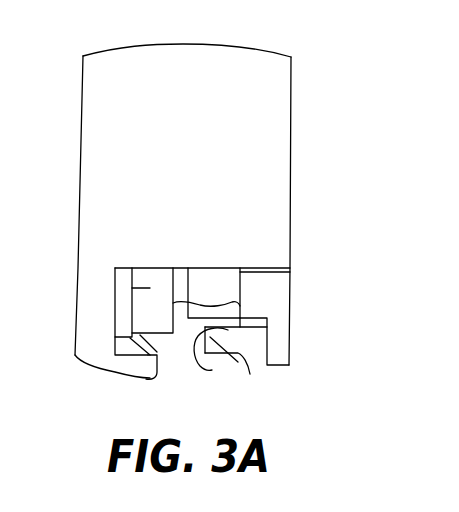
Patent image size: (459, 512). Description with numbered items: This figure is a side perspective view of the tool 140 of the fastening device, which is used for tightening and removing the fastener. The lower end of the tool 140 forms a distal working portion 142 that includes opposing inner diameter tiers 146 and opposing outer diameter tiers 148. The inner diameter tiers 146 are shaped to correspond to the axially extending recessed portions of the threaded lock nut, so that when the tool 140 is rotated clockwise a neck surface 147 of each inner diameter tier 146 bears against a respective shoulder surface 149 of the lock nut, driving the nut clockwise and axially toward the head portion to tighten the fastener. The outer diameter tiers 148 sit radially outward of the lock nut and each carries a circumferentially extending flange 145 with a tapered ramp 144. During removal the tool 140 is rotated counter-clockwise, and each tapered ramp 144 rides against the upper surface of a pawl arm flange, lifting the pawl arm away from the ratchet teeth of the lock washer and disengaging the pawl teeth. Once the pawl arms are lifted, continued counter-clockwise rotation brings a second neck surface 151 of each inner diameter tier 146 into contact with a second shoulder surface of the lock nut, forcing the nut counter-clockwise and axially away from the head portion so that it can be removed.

The tool 140 is at (333, 176).
The distal working portion 142 is at (336, 311).
The tapered ramp 144 is at (153, 343).
The circumferentially extending flange 145 is at (130, 370).
The inner diameter tier 146 is at (148, 288).
The neck surface 147 is at (255, 285).
The outer diameter tier 148 is at (95, 353).
The shoulder surface 149 is at (220, 355).
The second neck surface 151 is at (207, 293).